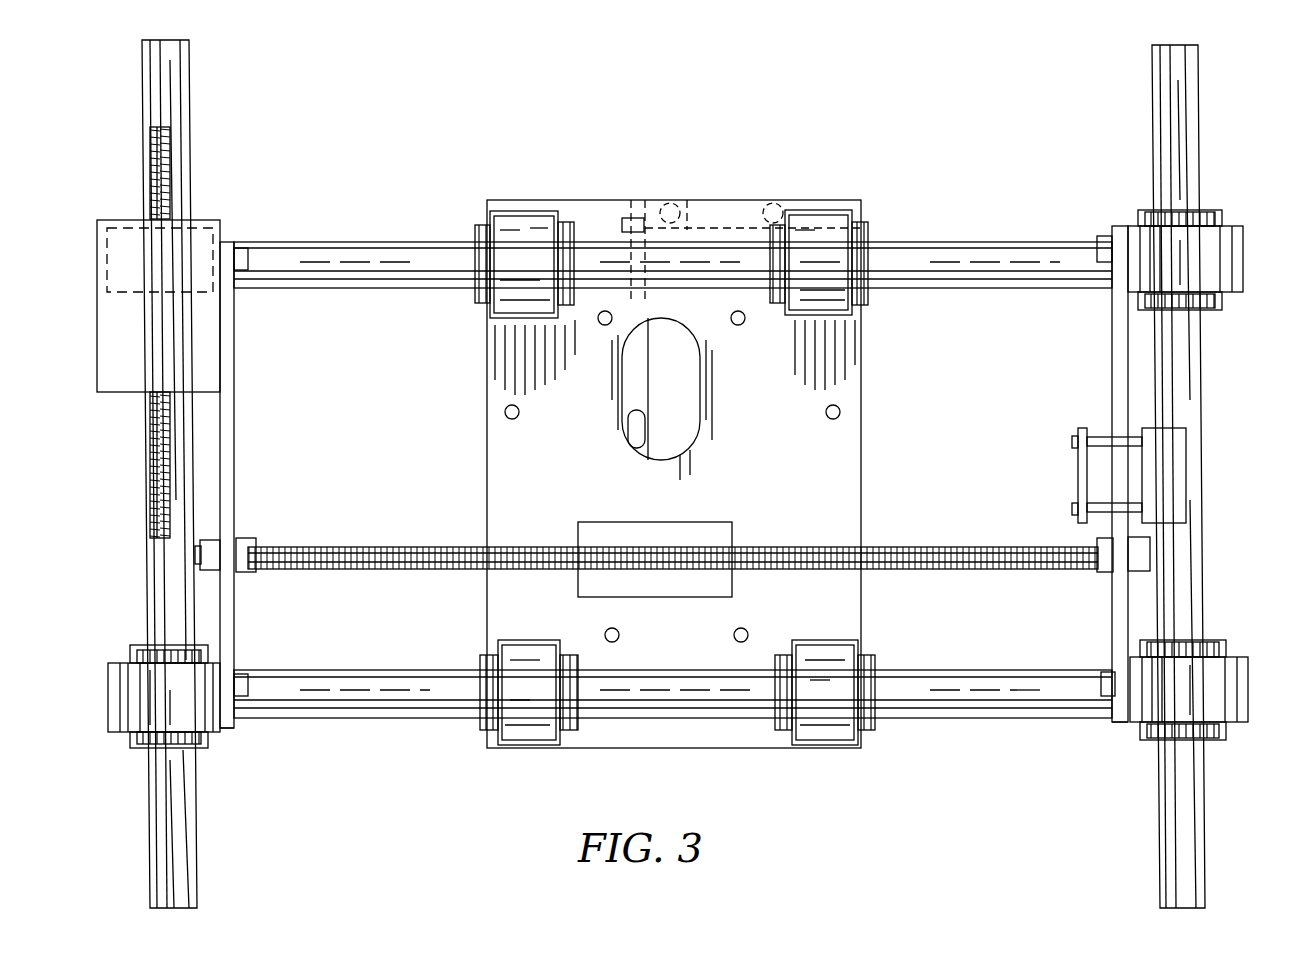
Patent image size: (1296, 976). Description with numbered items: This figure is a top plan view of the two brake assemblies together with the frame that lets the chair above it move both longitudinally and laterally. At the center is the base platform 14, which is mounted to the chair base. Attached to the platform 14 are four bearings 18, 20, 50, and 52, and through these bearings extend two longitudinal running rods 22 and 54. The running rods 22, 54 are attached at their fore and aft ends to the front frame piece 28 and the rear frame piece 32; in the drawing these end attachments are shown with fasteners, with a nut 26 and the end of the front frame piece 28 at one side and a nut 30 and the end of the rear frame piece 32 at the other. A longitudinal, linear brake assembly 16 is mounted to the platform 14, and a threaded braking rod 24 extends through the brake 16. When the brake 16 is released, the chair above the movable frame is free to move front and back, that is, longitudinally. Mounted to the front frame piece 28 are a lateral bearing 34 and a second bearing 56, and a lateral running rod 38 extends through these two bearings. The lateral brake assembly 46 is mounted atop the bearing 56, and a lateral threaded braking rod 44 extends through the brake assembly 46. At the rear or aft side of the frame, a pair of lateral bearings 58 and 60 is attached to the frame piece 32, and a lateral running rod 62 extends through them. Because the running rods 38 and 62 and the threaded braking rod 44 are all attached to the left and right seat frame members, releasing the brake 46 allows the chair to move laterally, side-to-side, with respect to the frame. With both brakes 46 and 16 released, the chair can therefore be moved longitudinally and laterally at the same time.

The base platform 14 is at (863, 420).
The longitudinal linear brake assembly 16 is at (685, 522).
The longitudinal bearing 18 is at (550, 616).
The longitudinal bearing 20 is at (840, 640).
The longitudinal running rod 22 is at (1020, 652).
The threaded braking rod 24 is at (846, 516).
The nut 26 is at (240, 672).
The front frame piece 28 is at (232, 732).
The nut 30 is at (1108, 670).
The frame piece 32 is at (1124, 726).
The lateral bearing 34 is at (110, 732).
The lateral running rod 38 is at (190, 93).
The lateral threaded braking rod 44 is at (170, 170).
The lateral brake assembly 46 is at (234, 352).
The bearing 50 is at (525, 210).
The bearing 52 is at (830, 210).
The longitudinal running rod 54 is at (1000, 226).
The bearing 56 is at (205, 220).
The lateral bearing 58 is at (1243, 240).
The lateral bearing 60 is at (1248, 670).
The lateral running rod 62 is at (1198, 360).